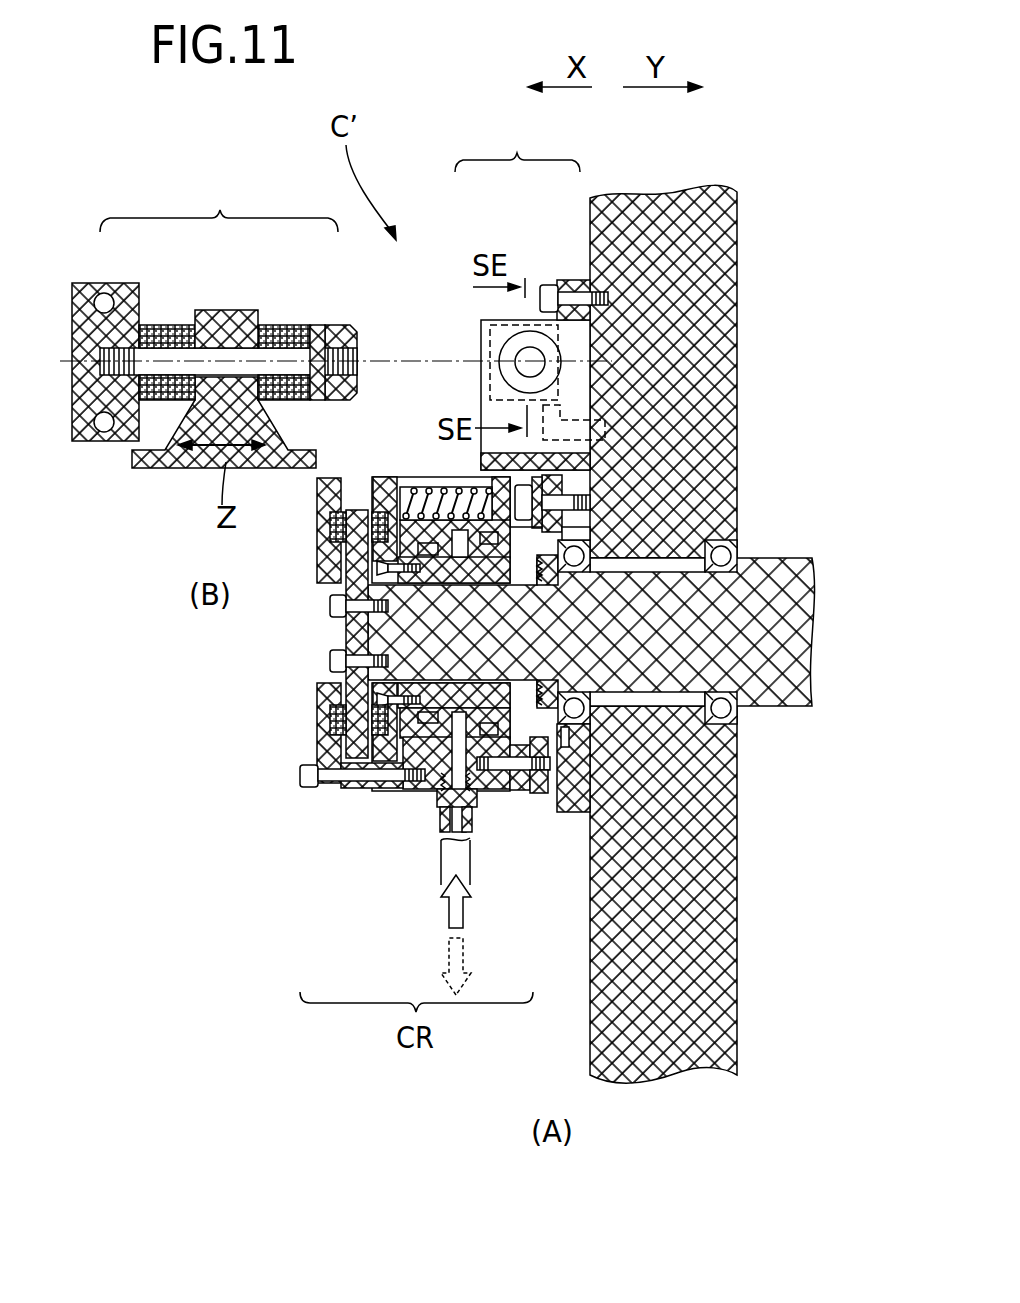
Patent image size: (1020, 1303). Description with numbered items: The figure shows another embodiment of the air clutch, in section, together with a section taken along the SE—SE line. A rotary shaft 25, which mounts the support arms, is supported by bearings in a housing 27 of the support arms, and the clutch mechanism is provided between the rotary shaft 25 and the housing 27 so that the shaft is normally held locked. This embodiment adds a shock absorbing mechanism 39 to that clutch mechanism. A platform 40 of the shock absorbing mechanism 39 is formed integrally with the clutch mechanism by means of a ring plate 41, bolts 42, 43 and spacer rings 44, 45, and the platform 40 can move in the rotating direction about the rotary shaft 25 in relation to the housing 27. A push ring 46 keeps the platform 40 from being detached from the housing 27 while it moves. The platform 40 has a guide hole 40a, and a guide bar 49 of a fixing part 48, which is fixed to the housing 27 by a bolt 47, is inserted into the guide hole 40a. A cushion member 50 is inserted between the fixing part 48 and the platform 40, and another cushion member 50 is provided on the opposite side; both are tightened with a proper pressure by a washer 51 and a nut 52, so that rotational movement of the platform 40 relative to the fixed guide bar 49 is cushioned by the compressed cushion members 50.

The rotary shaft 25 is at (790, 640).
The housing 27 is at (725, 312).
The shock absorbing mechanism 39 is at (340, 175).
The platform 40 is at (578, 805).
The guide hole 40a is at (258, 383).
The ring plate 41 is at (534, 790).
The bolt 42 is at (500, 795).
The bolt 43 is at (600, 517).
The spacer ring 44 is at (518, 795).
The spacer ring 45 is at (600, 508).
The push ring 46 is at (565, 742).
The bolt 47 is at (548, 292).
The fixing part 48 is at (570, 285).
The guide bar 49 is at (500, 352).
The cushion member 50 is at (265, 300).
The washer 51 is at (300, 325).
The nut 52 is at (505, 380).